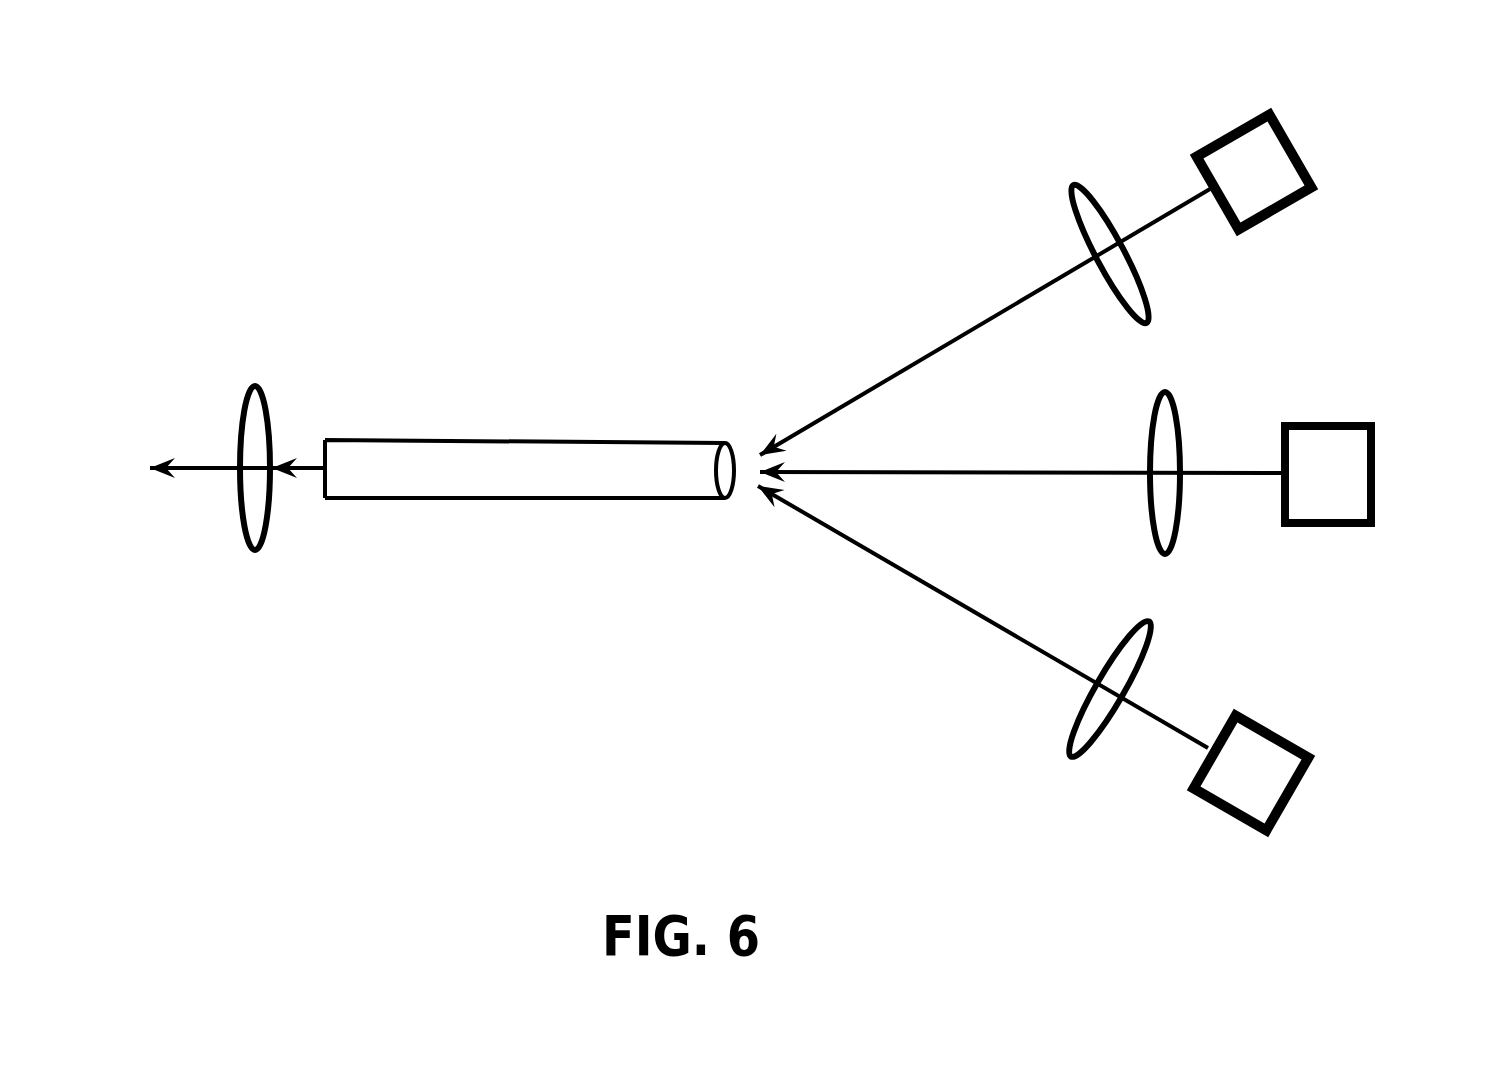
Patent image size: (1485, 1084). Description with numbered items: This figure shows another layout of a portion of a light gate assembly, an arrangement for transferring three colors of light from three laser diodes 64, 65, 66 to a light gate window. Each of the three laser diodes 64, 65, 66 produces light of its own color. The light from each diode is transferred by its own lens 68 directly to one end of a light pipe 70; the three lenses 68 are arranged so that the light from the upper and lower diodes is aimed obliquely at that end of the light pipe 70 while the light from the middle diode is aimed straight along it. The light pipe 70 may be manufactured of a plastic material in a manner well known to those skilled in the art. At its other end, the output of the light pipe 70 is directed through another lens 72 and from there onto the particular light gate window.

The laser diode 64 is at (1320, 132).
The laser diode 65 is at (1397, 468).
The laser diode 66 is at (1305, 788).
The lens 68 is at (1068, 232).
The light pipe 70 is at (547, 420).
The lens 72 is at (280, 410).